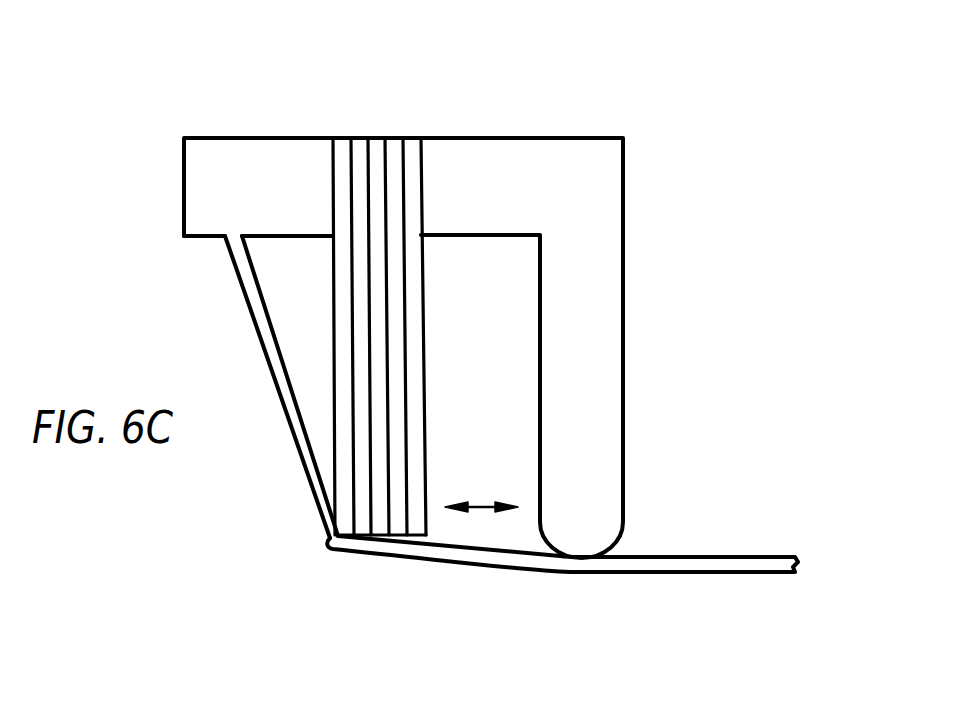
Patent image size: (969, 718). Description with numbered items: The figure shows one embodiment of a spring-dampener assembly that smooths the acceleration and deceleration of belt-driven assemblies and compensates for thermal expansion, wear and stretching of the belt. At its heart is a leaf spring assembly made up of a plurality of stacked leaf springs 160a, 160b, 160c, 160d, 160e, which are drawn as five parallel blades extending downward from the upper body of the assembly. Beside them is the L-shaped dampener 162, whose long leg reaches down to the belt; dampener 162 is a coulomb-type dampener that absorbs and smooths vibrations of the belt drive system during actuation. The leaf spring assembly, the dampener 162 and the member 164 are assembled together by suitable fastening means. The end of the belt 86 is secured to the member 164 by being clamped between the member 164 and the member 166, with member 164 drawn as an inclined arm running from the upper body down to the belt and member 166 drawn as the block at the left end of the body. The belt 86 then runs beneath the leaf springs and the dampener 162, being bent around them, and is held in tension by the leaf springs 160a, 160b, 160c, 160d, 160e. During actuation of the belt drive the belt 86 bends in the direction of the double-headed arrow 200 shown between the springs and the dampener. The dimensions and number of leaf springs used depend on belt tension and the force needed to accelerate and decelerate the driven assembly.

The L-shaped dampener 162 is at (623, 250).
The member 164 is at (287, 238).
The member 166 is at (184, 206).
The leaf spring 160a is at (338, 138).
The leaf spring 160b is at (360, 138).
The leaf spring 160c is at (375, 138).
The leaf spring 160d is at (392, 138).
The leaf spring 160e is at (408, 138).
The belt 86 is at (432, 563).
The arrow 200 is at (482, 505).